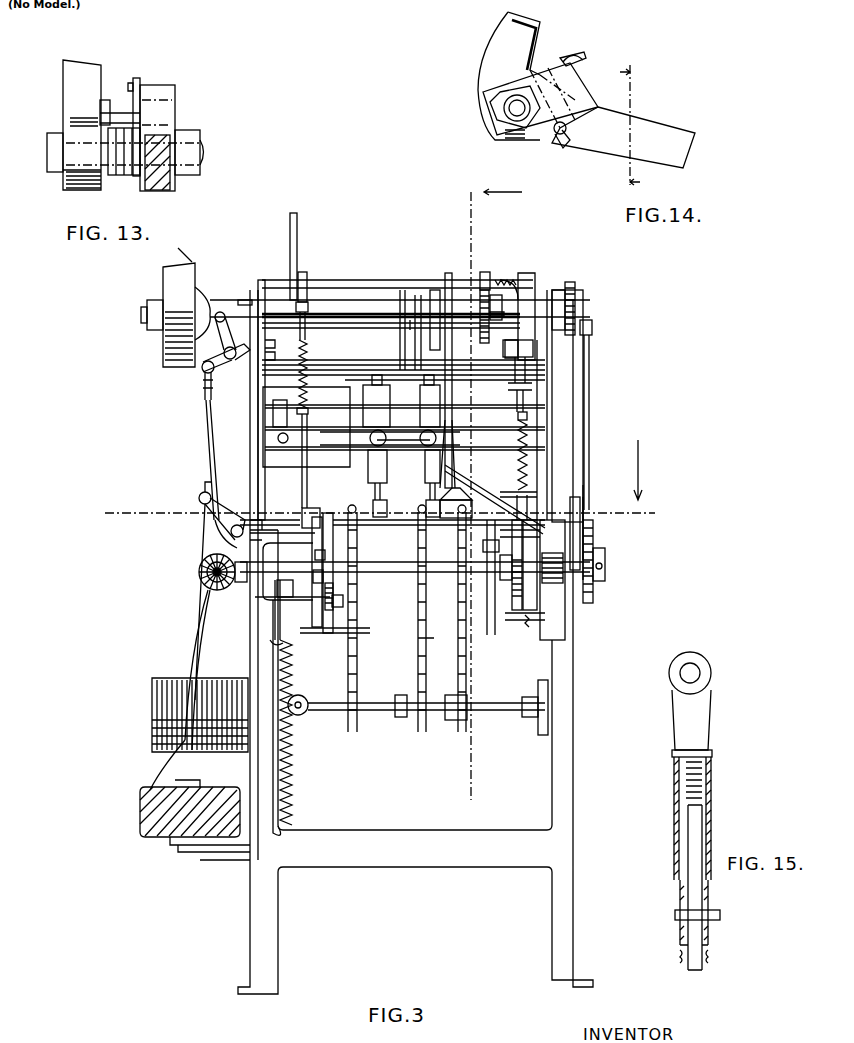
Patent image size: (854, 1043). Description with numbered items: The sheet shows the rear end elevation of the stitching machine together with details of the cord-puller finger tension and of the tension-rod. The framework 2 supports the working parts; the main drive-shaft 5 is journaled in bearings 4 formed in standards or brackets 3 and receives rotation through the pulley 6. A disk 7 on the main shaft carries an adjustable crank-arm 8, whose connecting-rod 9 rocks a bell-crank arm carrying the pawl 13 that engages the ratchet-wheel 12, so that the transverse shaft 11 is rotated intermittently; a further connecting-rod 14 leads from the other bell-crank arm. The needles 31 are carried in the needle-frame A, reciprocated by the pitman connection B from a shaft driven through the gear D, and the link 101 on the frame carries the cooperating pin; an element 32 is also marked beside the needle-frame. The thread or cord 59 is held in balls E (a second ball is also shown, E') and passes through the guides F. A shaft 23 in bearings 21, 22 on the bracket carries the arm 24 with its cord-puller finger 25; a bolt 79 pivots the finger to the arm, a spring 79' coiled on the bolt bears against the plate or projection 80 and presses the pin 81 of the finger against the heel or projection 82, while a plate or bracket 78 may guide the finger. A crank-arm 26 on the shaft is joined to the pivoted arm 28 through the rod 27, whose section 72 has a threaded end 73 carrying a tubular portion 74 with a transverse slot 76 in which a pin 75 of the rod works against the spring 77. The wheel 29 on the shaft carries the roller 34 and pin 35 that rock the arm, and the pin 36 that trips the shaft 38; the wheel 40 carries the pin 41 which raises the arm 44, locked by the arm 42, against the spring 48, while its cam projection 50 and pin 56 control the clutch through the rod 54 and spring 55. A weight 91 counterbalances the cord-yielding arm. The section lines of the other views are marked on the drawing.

In FIG. 3, the framework 2 is at (255, 653).
In FIG. 3, the standards or brackets 3 is at (248, 378).
In FIG. 3, the bearings 4 is at (246, 298).
In FIG. 3, the main drive-shaft 5 is at (492, 492).
In FIG. 3, the pulley 6 is at (380, 377).
In FIG. 3, the disk 7 is at (575, 295).
In FIG. 3, the crank-arm 8 is at (592, 327).
In FIG. 3, the connecting-rod 9 is at (598, 422).
In FIG. 3, the shaft 11 is at (385, 598).
In FIG. 3, the ratchet-wheel 12 is at (600, 550).
In FIG. 14, the pawl 13 is at (634, 128).
In FIG. 3, the connecting-rod 14 is at (574, 497).
In FIG. 3, the bearing 21 is at (268, 280).
In FIG. 3, the bearing 22 is at (534, 272).
In FIG. 3, the shaft 23 is at (372, 282).
In FIG. 13, the arm 24 is at (88, 74).
In FIG. 14, the arm 24 is at (532, 36).
In FIG. 3, the arm 24 is at (452, 350).
In FIG. 14, the finger 25 is at (672, 136).
In FIG. 13, the crank-arm 26 is at (162, 190).
In FIG. 3, the crank-arm 26 is at (297, 232).
In FIG. 3, the rod 27 is at (302, 490).
In FIG. 15, the rod 27 is at (715, 895).
In FIG. 3, the arm 28 is at (320, 545).
In FIG. 3, the disk or wheel 29 is at (330, 520).
In FIG. 3, the needles 31 is at (420, 492).
In FIG. 3, the wedge arm 32 is at (462, 425).
In FIG. 3, the roller or pin 34 is at (305, 606).
In FIG. 3, the pin or projection 35 is at (314, 558).
In FIG. 3, the pin or projection 36 is at (352, 600).
In FIG. 3, the shaft 38 is at (400, 632).
In FIG. 3, the wheel 40 is at (510, 565).
In FIG. 3, the pin or projection 41 is at (500, 532).
In FIG. 3, the arm 42 is at (490, 598).
In FIG. 3, the arm 44 is at (500, 560).
In FIG. 3, the spring 48 is at (293, 780).
In FIG. 3, the cam projection 50 is at (540, 600).
In FIG. 3, the rod 54 is at (527, 400).
In FIG. 3, the spring 55 is at (540, 478).
In FIG. 3, the pin or projection 56 is at (535, 595).
In FIG. 3, the thread or cord 59 is at (203, 600).
In FIG. 3, the section 72 is at (308, 272).
In FIG. 15, the section 72 is at (700, 718).
In FIG. 15, the threaded end 73 is at (710, 776).
In FIG. 3, the tubular portion 74 is at (322, 292).
In FIG. 15, the tubular portion 74 is at (712, 823).
In FIG. 3, the pin or projection 75 is at (322, 316).
In FIG. 15, the pin or projection 75 is at (675, 916).
In FIG. 3, the transverse slot 76 is at (312, 322).
In FIG. 15, the transverse slot 76 is at (680, 894).
In FIG. 3, the spring 77 is at (310, 368).
In FIG. 15, the spring 77 is at (712, 953).
In FIG. 13, the plate or bracket 78 is at (140, 80).
In FIG. 14, the plate or bracket 78 is at (586, 58).
In FIG. 13, the bolt 79 is at (55, 153).
In FIG. 14, the bolt 79 is at (515, 131).
In FIG. 13, the spring 79' is at (133, 157).
In FIG. 14, the spring 79' is at (565, 49).
In FIG. 13, the plate or projection 80 is at (172, 100).
In FIG. 14, the plate or projection 80 is at (588, 88).
In FIG. 14, the pin 81 is at (568, 138).
In FIG. 14, the heel or projection 82 is at (568, 126).
In FIG. 3, the weight 91 is at (300, 700).
In FIG. 3, the link 101 is at (585, 515).
In FIG. 3, the needle-frame A is at (320, 488).
In FIG. 3, the pitman connection B is at (402, 348).
In FIG. 3, the gear D is at (493, 332).
In FIG. 3, the balls E is at (181, 796).
In FIG. 3, the coil E' is at (183, 715).
In FIG. 3, the guides F is at (205, 591).